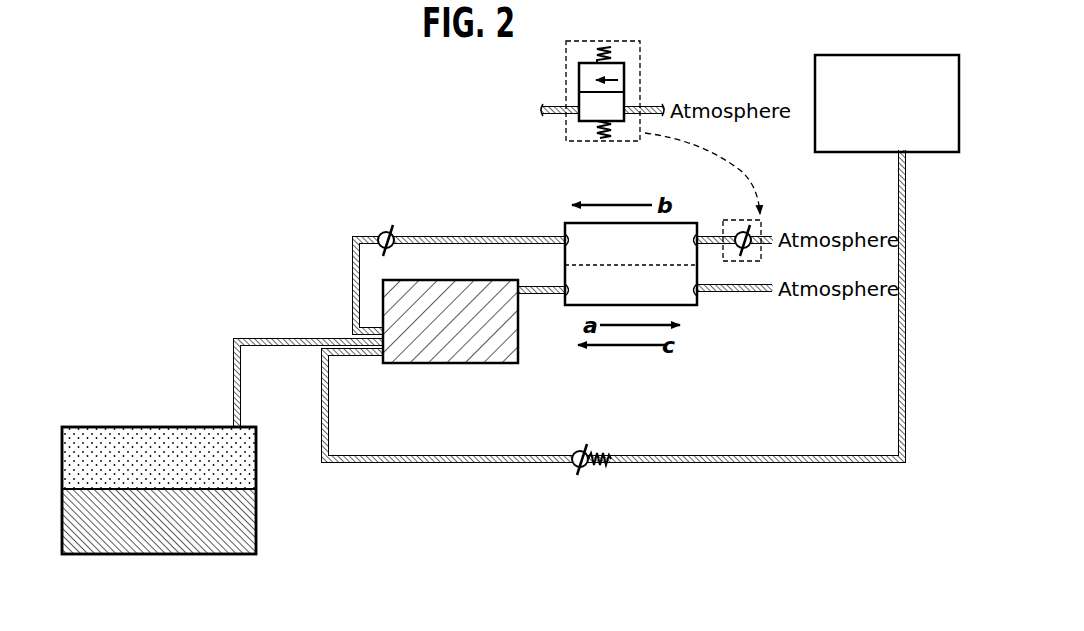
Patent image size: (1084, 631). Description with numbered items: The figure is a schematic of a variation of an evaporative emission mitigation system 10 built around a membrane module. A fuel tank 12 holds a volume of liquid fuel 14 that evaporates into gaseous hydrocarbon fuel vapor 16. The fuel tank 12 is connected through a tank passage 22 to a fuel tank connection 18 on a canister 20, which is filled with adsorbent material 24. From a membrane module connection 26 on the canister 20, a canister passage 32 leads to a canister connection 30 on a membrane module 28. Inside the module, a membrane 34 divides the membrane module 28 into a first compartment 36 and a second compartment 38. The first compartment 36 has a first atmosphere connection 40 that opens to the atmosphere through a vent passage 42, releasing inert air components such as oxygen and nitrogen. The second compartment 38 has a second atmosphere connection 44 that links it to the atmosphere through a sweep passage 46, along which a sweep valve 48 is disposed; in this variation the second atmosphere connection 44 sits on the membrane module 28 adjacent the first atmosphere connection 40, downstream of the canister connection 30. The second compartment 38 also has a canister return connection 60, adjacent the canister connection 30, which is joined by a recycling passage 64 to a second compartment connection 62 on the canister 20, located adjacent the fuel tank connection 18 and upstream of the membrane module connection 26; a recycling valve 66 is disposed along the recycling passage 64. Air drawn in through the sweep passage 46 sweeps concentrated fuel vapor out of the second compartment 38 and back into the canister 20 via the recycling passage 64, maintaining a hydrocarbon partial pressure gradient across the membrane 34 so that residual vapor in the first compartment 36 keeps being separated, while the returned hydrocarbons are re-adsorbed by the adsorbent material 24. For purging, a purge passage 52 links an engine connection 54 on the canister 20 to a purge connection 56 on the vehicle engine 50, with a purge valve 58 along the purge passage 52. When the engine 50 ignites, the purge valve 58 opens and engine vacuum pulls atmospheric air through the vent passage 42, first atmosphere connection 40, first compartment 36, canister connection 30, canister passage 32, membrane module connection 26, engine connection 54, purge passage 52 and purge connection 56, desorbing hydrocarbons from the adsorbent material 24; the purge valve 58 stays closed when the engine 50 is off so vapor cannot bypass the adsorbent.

The evaporative emission mitigation system 10 is at (228, 210).
The fuel tank 12 is at (197, 489).
The liquid fuel 14 is at (170, 535).
The gaseous hydrocarbon fuel vapor 16 is at (163, 443).
The fuel tank connection 18 is at (393, 358).
The canister 20 is at (510, 368).
The tank passage 22 is at (285, 338).
The adsorbent material 24 is at (490, 350).
The membrane module connection 26 is at (504, 283).
The membrane module 28 is at (694, 312).
The canister connection 30 is at (565, 305).
The canister passage 32 is at (528, 290).
The membrane 34 is at (660, 263).
The first compartment 36 is at (644, 292).
The second compartment 38 is at (680, 228).
The first atmosphere connection 40 is at (697, 300).
The vent passage 42 is at (752, 292).
The second atmosphere connection 44 is at (712, 237).
The sweep passage 46 is at (736, 235).
The sweep valve 48 is at (750, 232).
The vehicle engine 50 is at (808, 70).
The purge passage 52 is at (703, 463).
The engine connection 54 is at (392, 362).
The purge connection 56 is at (905, 152).
The purge valve 58 is at (575, 468).
The canister return connection 60 is at (565, 225).
The second compartment connection 62 is at (385, 325).
The recycling passage 64 is at (453, 237).
The recycling valve 66 is at (382, 232).